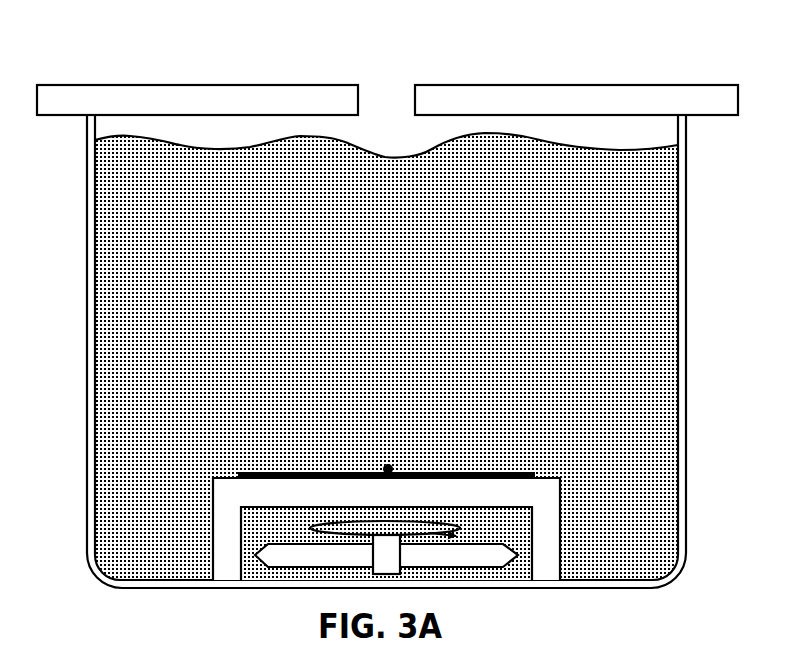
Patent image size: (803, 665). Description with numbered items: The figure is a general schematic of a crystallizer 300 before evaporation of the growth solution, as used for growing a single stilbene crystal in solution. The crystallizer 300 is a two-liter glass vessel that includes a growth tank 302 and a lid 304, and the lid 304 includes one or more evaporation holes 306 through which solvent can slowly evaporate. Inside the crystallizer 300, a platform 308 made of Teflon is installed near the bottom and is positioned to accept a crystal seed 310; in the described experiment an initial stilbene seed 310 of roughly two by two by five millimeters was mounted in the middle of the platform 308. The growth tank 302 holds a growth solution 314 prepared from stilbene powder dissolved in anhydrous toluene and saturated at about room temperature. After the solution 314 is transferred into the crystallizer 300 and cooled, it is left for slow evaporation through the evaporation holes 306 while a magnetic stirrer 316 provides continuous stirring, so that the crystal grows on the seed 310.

The crystallizer 300 is at (481, 61).
The growth tank 302 is at (686, 258).
The lid 304 is at (168, 86).
The evaporation hole 306 is at (380, 90).
The platform 308 is at (212, 498).
The crystal seed 310 is at (387, 454).
The growth solution 314 is at (231, 316).
The magnetic stirrer 316 is at (333, 565).